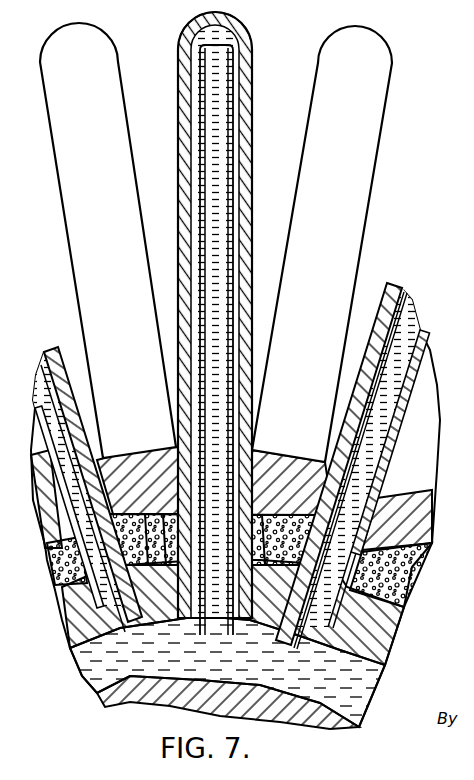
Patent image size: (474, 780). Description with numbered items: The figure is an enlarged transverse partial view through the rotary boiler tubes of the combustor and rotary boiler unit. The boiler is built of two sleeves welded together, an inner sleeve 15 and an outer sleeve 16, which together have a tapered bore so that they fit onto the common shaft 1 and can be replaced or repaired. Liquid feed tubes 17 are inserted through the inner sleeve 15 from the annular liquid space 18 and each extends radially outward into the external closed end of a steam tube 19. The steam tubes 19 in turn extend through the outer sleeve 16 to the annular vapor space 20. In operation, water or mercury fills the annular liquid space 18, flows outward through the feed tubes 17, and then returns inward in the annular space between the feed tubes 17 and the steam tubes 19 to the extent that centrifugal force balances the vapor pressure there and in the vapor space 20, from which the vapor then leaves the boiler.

The common shaft 1 is at (372, 727).
The inner sleeve 15 is at (383, 625).
The outer sleeve 16 is at (422, 522).
The liquid feed tube 17 is at (232, 133).
The annular liquid space 18 is at (357, 687).
The steam tube 19 is at (97, 122).
The annular vapor space 20 is at (153, 488).